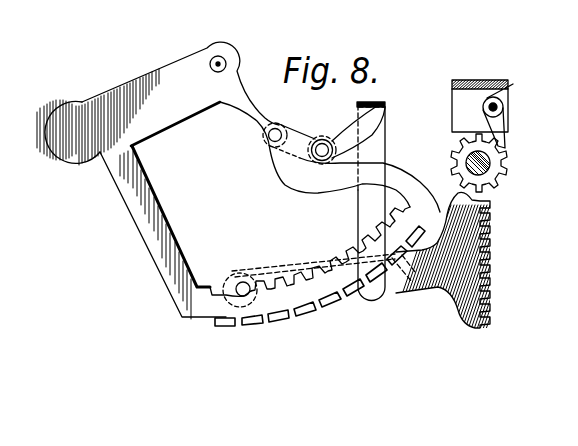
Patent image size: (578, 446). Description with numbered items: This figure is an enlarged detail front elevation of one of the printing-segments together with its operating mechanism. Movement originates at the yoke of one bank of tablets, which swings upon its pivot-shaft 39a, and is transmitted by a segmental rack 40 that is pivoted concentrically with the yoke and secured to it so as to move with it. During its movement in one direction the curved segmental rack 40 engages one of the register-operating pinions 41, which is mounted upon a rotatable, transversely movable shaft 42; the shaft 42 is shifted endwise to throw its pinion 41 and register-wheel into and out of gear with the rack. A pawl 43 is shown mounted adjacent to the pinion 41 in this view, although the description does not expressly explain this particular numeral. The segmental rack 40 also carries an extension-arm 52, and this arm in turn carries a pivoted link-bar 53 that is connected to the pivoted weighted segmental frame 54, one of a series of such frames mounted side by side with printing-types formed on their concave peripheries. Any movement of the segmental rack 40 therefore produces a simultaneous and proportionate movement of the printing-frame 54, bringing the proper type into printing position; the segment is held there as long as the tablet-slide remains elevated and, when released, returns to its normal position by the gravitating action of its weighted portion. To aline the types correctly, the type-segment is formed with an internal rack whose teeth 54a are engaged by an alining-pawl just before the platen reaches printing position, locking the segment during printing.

The weighted segmental frame 54 is at (203, 107).
The teeth of internal rack 54a is at (247, 288).
The pivot-shaft 39a is at (243, 296).
The pivoted link-bar 53 is at (289, 126).
The extension-arm 52 is at (340, 132).
The pawl 43 is at (498, 132).
The register-operating pinion 41 is at (498, 160).
The shaft 42 is at (494, 177).
The segmental rack 40 is at (492, 246).